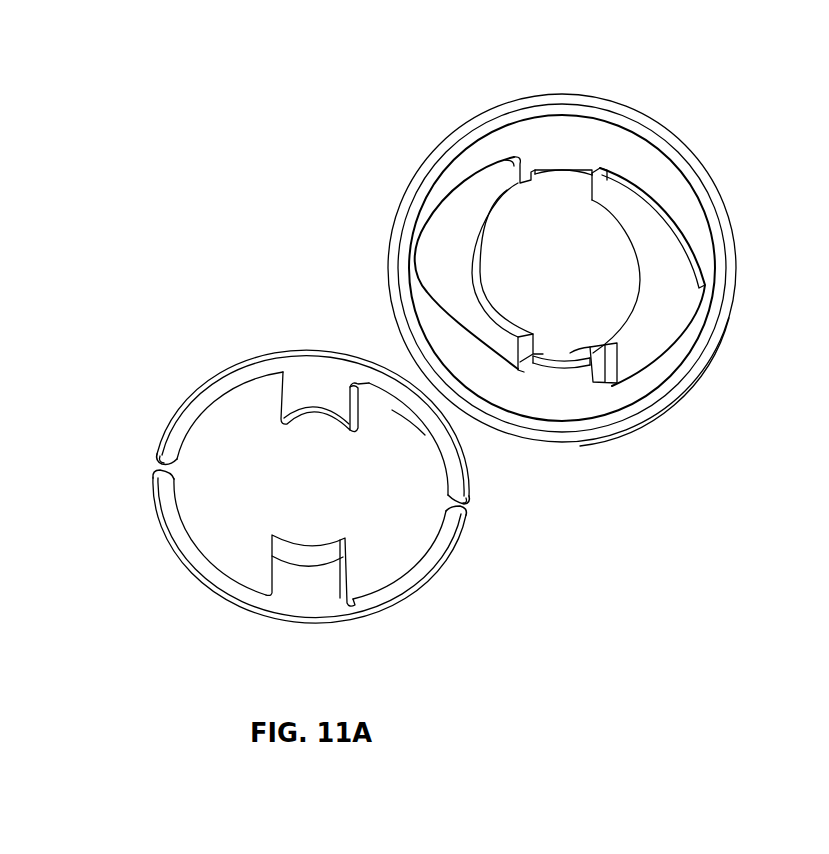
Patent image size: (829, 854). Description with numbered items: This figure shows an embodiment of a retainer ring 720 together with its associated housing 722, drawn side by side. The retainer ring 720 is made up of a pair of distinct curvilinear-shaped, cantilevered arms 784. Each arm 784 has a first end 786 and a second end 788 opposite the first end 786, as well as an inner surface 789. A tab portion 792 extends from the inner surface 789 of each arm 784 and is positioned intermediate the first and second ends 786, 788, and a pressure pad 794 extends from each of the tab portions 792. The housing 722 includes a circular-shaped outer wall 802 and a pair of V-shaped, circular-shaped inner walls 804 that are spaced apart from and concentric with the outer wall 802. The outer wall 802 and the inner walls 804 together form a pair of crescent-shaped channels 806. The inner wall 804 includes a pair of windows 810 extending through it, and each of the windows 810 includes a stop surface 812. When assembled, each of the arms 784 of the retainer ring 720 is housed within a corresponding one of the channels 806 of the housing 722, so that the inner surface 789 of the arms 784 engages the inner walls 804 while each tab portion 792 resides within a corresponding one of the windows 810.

The retainer ring 720 is at (193, 326).
The housing 722 is at (696, 125).
The cantilevered arms 784 is at (296, 353).
The first end 786 is at (163, 450).
The second end 788 is at (478, 500).
The inner surface 789 is at (425, 435).
The tab portion 792 is at (318, 390).
The pressure pad 794 is at (305, 418).
The outer wall 802 is at (418, 172).
The inner walls 804 is at (478, 195).
The crescent-shaped channels 806 is at (553, 143).
The windows 810 is at (562, 200).
The stop surface 812 is at (529, 178).